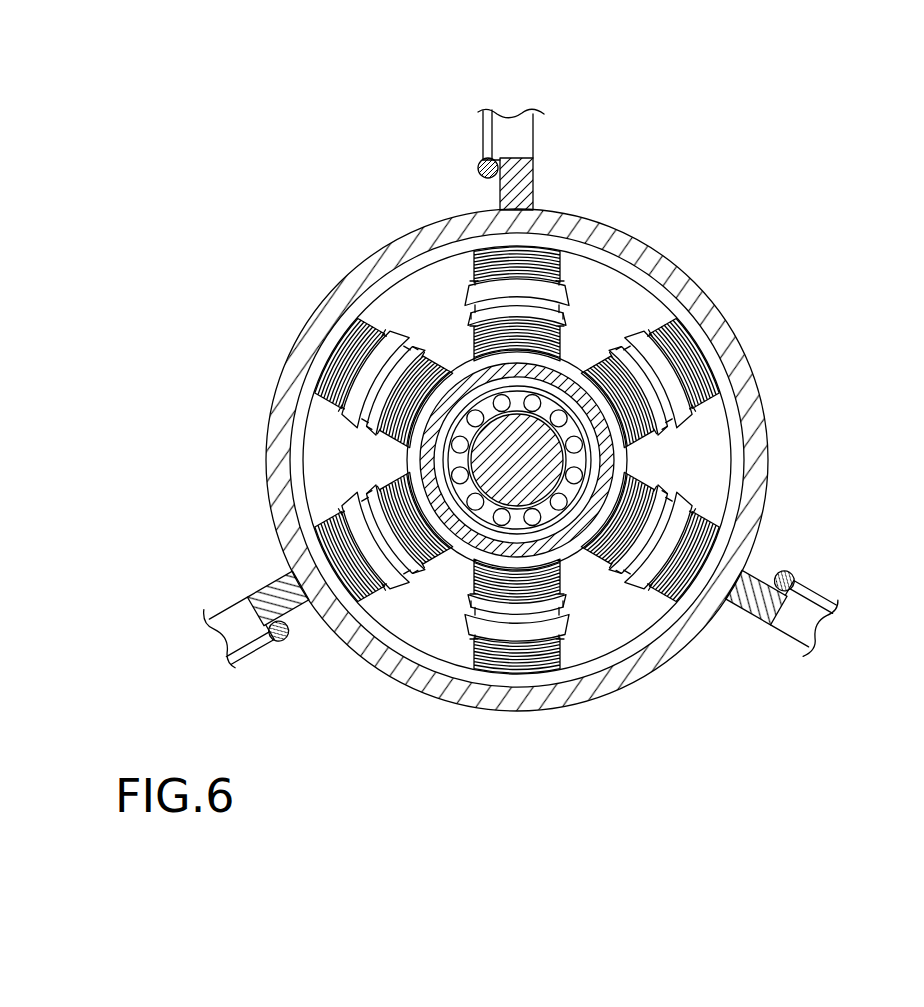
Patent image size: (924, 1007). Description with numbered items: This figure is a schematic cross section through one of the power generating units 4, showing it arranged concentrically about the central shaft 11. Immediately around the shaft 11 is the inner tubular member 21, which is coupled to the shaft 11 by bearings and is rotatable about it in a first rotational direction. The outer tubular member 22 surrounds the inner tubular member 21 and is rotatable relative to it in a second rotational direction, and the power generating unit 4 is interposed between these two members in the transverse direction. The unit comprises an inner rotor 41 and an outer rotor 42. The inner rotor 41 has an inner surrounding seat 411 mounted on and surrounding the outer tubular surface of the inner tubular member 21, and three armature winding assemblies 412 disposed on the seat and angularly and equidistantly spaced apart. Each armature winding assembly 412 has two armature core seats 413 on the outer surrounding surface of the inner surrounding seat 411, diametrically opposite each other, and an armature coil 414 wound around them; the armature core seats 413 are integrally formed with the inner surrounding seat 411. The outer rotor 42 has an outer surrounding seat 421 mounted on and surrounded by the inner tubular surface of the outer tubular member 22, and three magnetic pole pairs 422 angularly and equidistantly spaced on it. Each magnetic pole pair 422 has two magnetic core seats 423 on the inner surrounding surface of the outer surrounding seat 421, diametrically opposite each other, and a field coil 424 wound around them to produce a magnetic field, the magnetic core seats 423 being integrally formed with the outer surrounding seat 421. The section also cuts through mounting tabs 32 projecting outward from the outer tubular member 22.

The power generating unit 4 is at (413, 178).
The shaft 11 is at (507, 440).
The inner tubular member 21 is at (527, 365).
The outer tubular member 22 is at (750, 416).
The mounting tab 32 is at (525, 175).
The inner rotor 41 is at (422, 488).
The outer rotor 42 is at (522, 484).
The inner surrounding seat 411 is at (362, 598).
The armature winding assembly 412 is at (422, 528).
The armature core seat 413 is at (470, 318).
The armature coil 414 is at (470, 608).
The outer surrounding seat 421 is at (737, 465).
The magnetic pole pair 422 is at (455, 521).
The magnetic core seat 423 is at (563, 291).
The field coil 424 is at (548, 660).